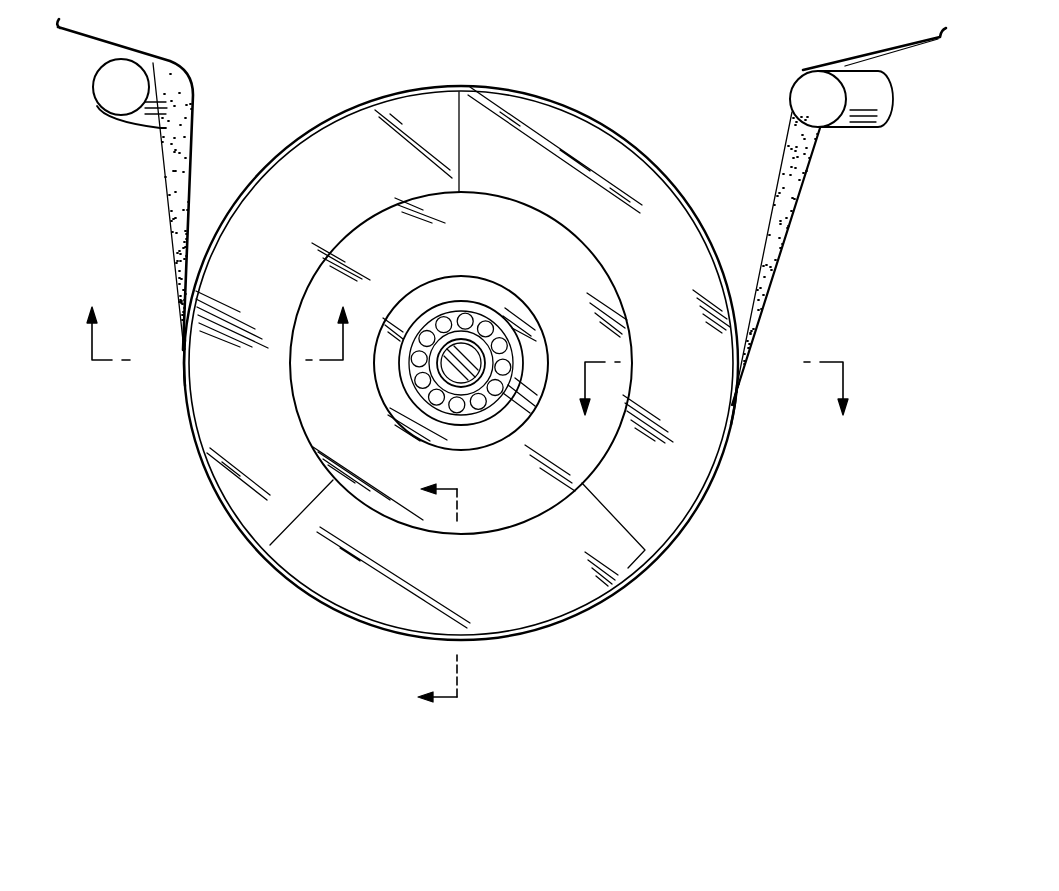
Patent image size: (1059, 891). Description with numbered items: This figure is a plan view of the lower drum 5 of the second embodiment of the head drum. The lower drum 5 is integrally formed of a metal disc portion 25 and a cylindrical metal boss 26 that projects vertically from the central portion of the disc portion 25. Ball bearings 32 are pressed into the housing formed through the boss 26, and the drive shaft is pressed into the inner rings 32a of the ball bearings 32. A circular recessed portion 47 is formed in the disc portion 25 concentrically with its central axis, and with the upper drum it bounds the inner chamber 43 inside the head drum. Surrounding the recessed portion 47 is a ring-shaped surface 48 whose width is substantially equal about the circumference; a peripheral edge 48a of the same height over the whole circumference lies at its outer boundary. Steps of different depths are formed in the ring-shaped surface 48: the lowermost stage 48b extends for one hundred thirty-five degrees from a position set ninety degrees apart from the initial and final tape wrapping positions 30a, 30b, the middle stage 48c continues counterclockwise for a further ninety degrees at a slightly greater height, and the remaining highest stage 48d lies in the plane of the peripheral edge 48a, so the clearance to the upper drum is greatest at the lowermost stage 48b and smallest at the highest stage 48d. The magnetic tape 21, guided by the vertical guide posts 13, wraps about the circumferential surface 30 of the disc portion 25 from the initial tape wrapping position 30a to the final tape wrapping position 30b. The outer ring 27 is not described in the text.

The lower drum 5 is at (651, 93).
The vertical guide post 13 is at (100, 101).
The magnetic tape 21 is at (189, 148).
The disc portion 25 is at (688, 515).
The boss 26 is at (501, 293).
The outer ring 27 is at (471, 362).
The circumferential surface 30 is at (561, 623).
The initial tape wrapping position 30a is at (181, 358).
The final tape wrapping position 30b is at (734, 415).
The ball bearings 32 is at (429, 302).
The inner rings 32a is at (473, 320).
The inner chamber 43 is at (366, 438).
The circular recessed portion 47 is at (553, 216).
The ring-shaped surface 48 is at (506, 97).
The peripheral edge 48a is at (242, 532).
The lowermost stage 48b is at (317, 150).
The middle stage 48c is at (357, 608).
The highest stage 48d is at (680, 208).